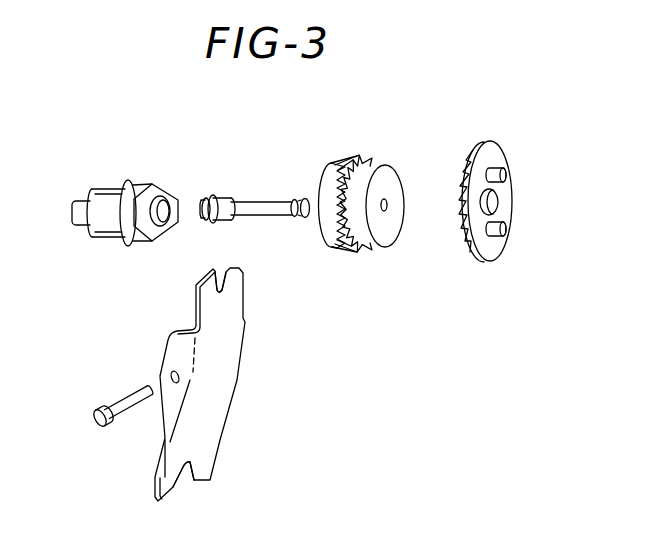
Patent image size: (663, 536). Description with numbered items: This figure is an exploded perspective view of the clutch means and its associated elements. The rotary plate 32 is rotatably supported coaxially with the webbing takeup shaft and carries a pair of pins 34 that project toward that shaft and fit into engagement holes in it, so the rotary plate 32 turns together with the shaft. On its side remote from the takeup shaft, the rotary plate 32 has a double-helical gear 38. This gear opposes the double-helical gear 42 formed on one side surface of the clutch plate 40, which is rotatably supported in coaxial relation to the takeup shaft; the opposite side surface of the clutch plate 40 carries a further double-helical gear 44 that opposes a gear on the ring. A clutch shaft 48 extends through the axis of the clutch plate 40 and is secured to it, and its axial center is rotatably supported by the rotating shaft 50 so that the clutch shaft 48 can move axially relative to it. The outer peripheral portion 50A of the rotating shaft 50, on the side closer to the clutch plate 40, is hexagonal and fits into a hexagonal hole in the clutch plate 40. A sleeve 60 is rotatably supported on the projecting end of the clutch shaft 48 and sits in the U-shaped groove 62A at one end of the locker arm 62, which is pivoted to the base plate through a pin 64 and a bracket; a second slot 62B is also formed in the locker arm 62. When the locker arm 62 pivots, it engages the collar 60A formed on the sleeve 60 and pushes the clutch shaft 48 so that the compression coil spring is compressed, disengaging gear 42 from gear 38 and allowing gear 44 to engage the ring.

The rotary plate 32 is at (494, 157).
The pins 34 is at (506, 177).
The double-helical gear 38 is at (457, 182).
The clutch plate 40 is at (393, 233).
The double-helical gear 42 is at (373, 160).
The double-helical gear 44 is at (343, 165).
The clutch shaft 48 is at (278, 208).
The rotating shaft 50 is at (112, 228).
The outer peripheral portion 50A is at (153, 188).
The sleeve 60 is at (223, 200).
The collar 60A is at (213, 188).
The locker arm 62 is at (218, 403).
The U-shaped groove 62A is at (229, 283).
The slot 62B is at (195, 477).
The pin 64 is at (127, 396).